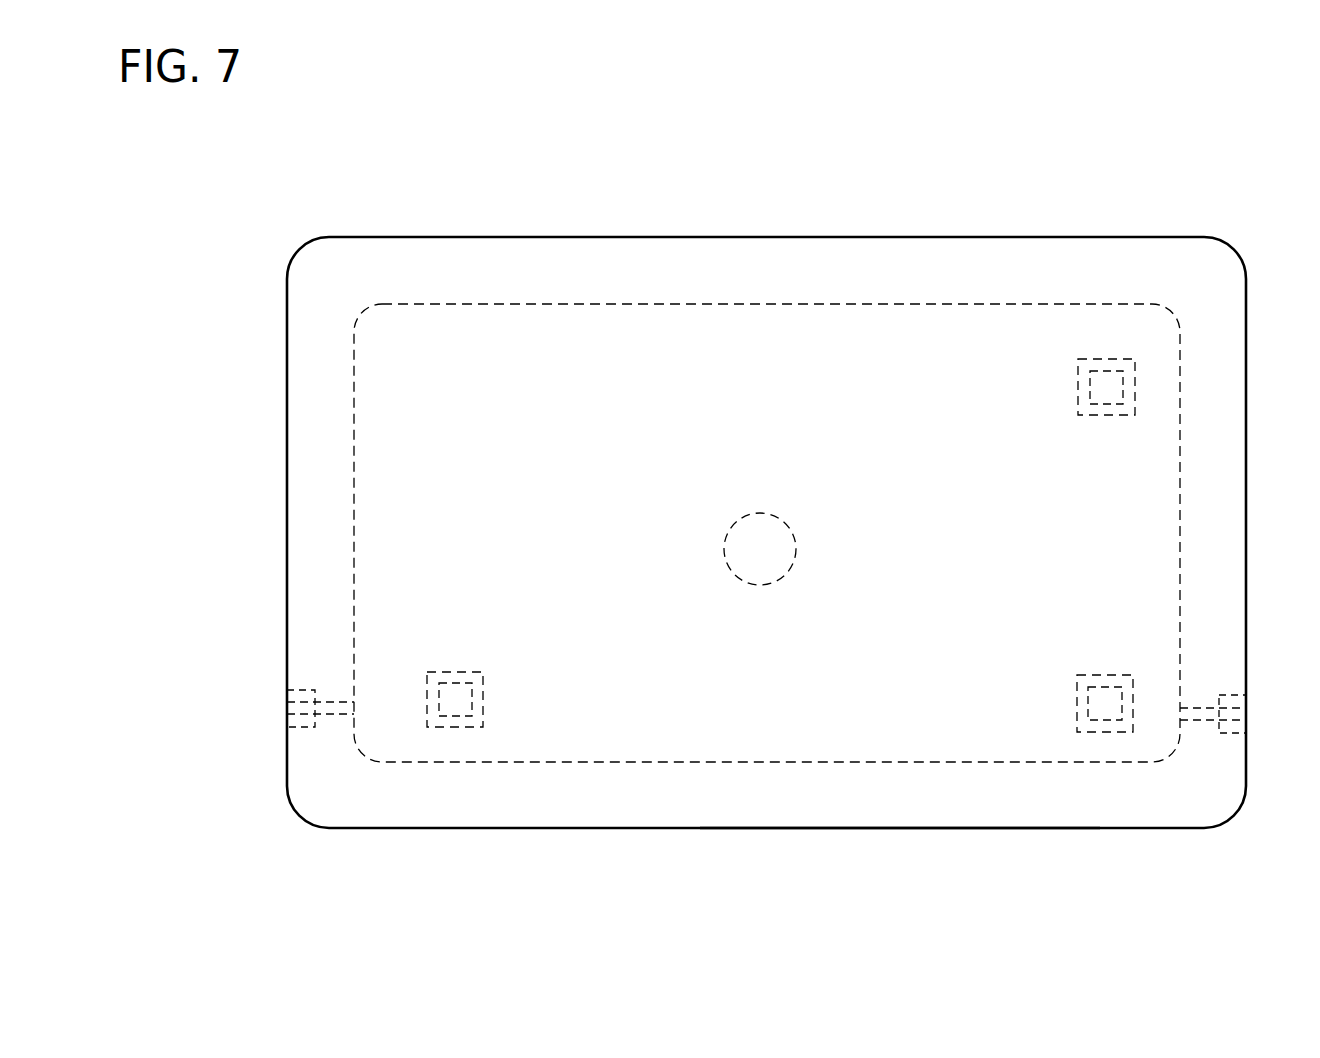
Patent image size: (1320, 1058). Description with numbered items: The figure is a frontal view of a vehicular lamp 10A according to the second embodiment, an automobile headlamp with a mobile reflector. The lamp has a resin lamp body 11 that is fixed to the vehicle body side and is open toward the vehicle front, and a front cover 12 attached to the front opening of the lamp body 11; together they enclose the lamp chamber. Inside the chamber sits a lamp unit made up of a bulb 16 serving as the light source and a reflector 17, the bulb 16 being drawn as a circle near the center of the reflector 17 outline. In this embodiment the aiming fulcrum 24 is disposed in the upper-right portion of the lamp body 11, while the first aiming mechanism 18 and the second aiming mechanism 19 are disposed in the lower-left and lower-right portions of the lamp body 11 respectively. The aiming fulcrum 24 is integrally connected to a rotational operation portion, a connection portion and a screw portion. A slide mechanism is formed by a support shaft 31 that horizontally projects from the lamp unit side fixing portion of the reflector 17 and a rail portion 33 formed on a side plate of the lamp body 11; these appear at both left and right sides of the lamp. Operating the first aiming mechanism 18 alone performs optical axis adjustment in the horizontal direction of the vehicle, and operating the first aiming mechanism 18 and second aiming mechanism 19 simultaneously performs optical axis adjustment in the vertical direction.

The vehicular lamp 10A is at (1045, 176).
The lamp body 11 is at (797, 237).
The front cover 12 is at (993, 812).
The bulb 16 is at (760, 586).
The reflector 17 is at (740, 764).
The first aiming mechanism 18 is at (458, 737).
The second aiming mechanism 19 is at (1108, 742).
The aiming fulcrum 24 is at (1110, 358).
The support shaft 31 is at (330, 716).
The rail portion 33 is at (287, 700).